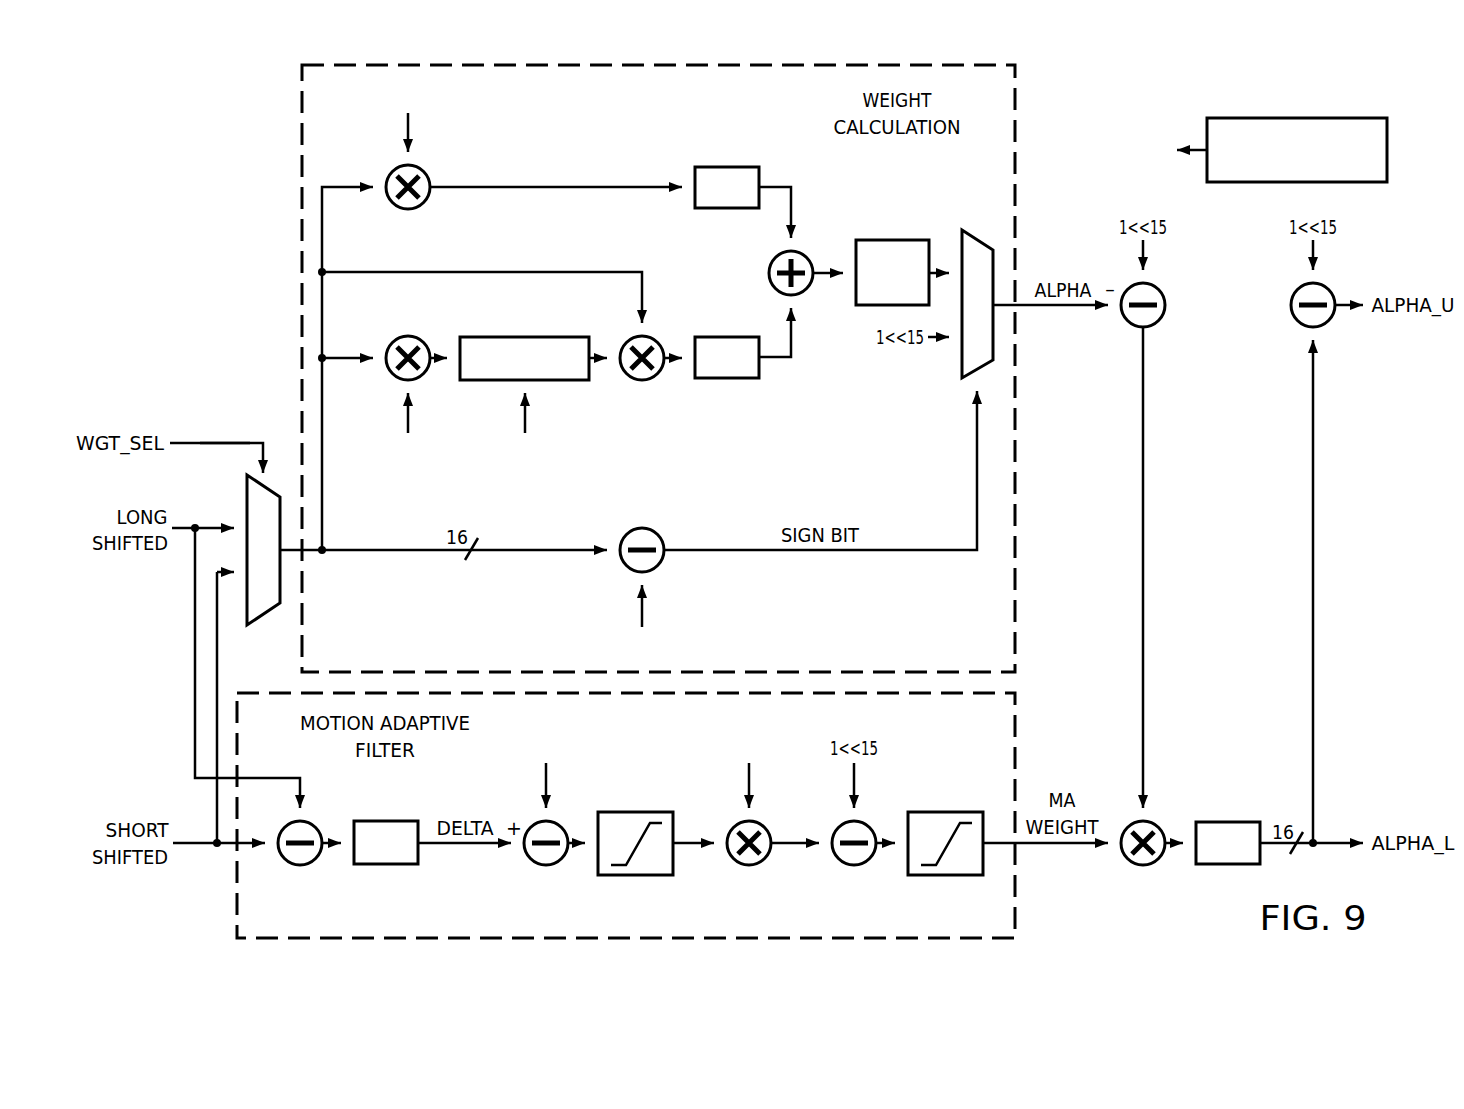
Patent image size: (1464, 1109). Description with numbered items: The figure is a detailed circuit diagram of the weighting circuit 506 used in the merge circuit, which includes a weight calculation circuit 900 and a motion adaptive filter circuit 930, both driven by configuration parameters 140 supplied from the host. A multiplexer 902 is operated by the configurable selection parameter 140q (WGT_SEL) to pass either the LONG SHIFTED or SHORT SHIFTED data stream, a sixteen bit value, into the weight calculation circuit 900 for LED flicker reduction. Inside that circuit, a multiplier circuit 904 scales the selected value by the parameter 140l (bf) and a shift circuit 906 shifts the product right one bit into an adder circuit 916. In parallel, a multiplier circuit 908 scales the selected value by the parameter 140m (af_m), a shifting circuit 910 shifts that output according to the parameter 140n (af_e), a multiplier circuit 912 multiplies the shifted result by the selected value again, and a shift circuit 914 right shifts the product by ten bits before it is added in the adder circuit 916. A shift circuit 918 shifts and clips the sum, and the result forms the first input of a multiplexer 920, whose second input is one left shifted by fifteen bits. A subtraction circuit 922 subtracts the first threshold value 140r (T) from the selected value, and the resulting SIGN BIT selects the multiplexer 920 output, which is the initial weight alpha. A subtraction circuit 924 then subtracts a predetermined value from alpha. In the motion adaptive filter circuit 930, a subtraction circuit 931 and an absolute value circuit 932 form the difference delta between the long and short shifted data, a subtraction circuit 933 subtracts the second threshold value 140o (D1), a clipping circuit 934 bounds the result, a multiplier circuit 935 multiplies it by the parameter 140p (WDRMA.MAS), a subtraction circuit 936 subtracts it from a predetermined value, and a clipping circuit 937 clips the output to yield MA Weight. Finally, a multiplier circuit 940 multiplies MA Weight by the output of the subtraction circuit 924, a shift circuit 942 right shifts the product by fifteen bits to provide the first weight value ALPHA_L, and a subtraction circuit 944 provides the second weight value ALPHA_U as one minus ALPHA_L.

The weighting circuit 506 is at (166, 116).
The weight calculation circuit 900 is at (1020, 126).
The motion adaptive filter circuit 930 is at (235, 905).
The configuration parameters 140 is at (1295, 118).
The configurable parameter bf 140l is at (405, 133).
The configurable parameter af_m 140m is at (410, 413).
The configurable parameter af_e 140n is at (527, 413).
The second threshold value D1 140o is at (542, 795).
The configuration parameter WDRMA.MAS 140p is at (752, 795).
The configurable selection parameter WGT_SEL 140q is at (215, 442).
The first threshold value T 140r is at (640, 603).
The multiplexer 902 is at (247, 497).
The multiplier circuit 904 is at (404, 209).
The shift circuit 906 is at (727, 167).
The multiplier circuit 908 is at (401, 336).
The shifting circuit 910 is at (514, 337).
The multiplier circuit 912 is at (651, 378).
The shift circuit 914 is at (731, 378).
The adder circuit 916 is at (806, 257).
The shift circuit 918 is at (892, 240).
The multiplexer 920 is at (962, 360).
The subtraction circuit 922 is at (637, 528).
The subtraction circuit 924 is at (1160, 322).
The subtraction circuit 931 is at (295, 866).
The absolute value circuit 932 is at (386, 864).
The subtraction circuit 933 is at (538, 866).
The clipping circuit 934 is at (637, 875).
The multiplier circuit 935 is at (758, 864).
The subtraction circuit 936 is at (867, 864).
The clipping circuit 937 is at (947, 875).
The multiplier circuit 940 is at (1152, 864).
The shift circuit 942 is at (1230, 822).
The subtraction circuit 944 is at (1296, 322).